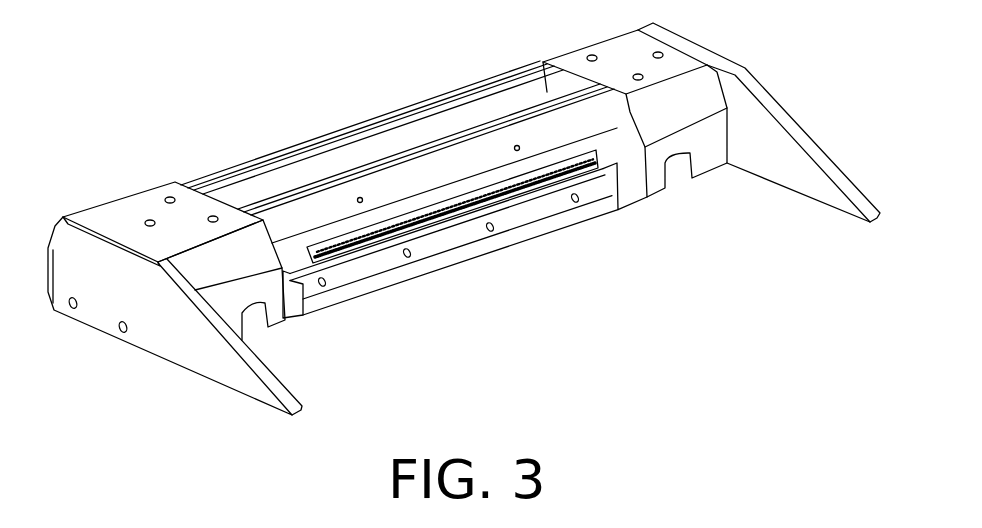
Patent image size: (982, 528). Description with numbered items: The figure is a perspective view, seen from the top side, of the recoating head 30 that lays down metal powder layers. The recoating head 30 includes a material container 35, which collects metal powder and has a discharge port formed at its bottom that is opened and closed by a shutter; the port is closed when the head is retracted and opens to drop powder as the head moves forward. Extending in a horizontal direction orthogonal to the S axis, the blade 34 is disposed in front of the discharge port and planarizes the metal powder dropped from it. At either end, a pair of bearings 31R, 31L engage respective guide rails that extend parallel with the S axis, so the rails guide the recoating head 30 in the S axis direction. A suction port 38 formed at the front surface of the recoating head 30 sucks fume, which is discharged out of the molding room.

The recoating head 30 is at (271, 37).
The bearing 31L is at (277, 313).
The bearing 31R is at (705, 165).
The blade 34 is at (478, 253).
The material container 35 is at (462, 122).
The suction port 38 is at (517, 192).